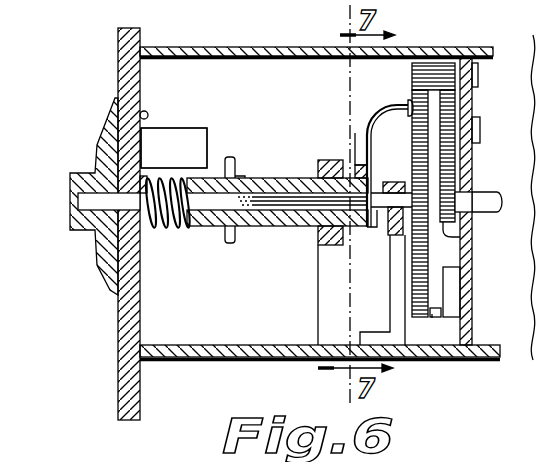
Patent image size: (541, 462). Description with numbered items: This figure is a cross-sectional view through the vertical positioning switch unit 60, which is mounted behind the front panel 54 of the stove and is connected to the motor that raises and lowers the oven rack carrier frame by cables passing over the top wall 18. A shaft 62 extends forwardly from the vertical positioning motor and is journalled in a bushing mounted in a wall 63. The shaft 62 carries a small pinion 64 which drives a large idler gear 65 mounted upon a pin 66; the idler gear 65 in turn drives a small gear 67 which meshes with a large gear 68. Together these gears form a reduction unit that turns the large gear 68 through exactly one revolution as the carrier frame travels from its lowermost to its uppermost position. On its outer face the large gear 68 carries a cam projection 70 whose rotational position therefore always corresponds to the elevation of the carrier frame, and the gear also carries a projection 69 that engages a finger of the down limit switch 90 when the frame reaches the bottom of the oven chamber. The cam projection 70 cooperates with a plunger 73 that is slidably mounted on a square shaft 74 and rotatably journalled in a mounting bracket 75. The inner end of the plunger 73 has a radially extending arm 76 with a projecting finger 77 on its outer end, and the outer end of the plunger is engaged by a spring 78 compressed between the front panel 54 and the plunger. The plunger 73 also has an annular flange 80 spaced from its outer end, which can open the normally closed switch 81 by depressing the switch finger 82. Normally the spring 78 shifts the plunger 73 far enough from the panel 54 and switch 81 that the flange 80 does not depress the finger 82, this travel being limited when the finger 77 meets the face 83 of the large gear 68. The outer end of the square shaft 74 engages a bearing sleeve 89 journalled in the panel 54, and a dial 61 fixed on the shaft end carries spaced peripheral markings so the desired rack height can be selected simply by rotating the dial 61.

The top wall 18 is at (254, 362).
The front panel 54 is at (117, 70).
The vertical positioning switch unit 60 is at (257, 82).
The dial 61 is at (103, 133).
The shaft 62 is at (497, 205).
The wall 63 is at (472, 314).
The small pinion 64 is at (472, 238).
The large idler gear 65 is at (456, 102).
The pin 66 is at (480, 133).
The small gear 67 is at (437, 74).
The large gear 68 is at (412, 156).
The projection 69 is at (431, 316).
The cam projection 70 is at (404, 94).
The plunger 73 is at (280, 172).
The square shaft 74 is at (275, 226).
The mounting bracket 75 is at (318, 303).
The radially extending arm 76 is at (363, 137).
The projecting finger 77 is at (395, 106).
The spring 78 is at (163, 228).
The annular flange 80 is at (234, 167).
The normally closed switch 81 is at (181, 128).
The switch finger 82 is at (214, 160).
The face 83 is at (410, 258).
The bearing sleeve 89 is at (143, 152).
The down limit switch 90 is at (458, 287).